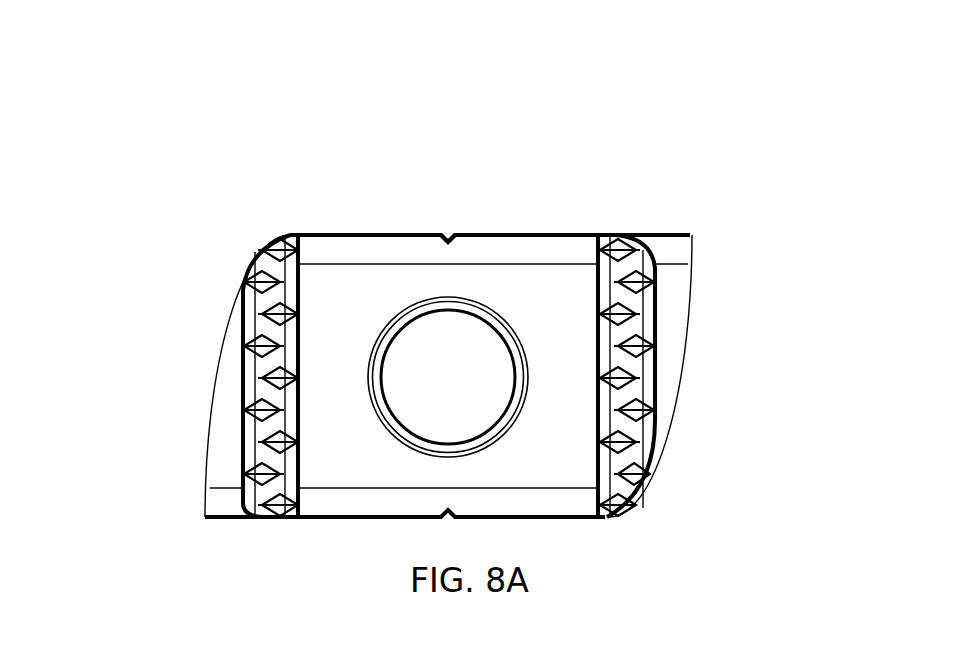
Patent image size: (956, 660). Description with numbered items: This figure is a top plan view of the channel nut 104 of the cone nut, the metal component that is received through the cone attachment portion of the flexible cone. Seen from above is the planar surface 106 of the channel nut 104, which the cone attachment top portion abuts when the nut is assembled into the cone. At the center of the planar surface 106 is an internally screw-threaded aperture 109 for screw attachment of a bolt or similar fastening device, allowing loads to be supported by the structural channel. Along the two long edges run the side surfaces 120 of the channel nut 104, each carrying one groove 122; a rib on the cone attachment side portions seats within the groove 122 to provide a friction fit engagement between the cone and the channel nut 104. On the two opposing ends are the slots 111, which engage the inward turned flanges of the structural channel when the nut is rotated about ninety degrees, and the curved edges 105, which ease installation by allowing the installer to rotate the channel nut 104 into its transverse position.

The channel nut 104 is at (616, 168).
The curved edges 105 is at (220, 345).
The planar surface 106 is at (372, 317).
The internally screw-threaded aperture 109 is at (478, 392).
The slots 111 is at (256, 272).
The side surfaces 120 is at (343, 232).
The groove 122 is at (450, 232).